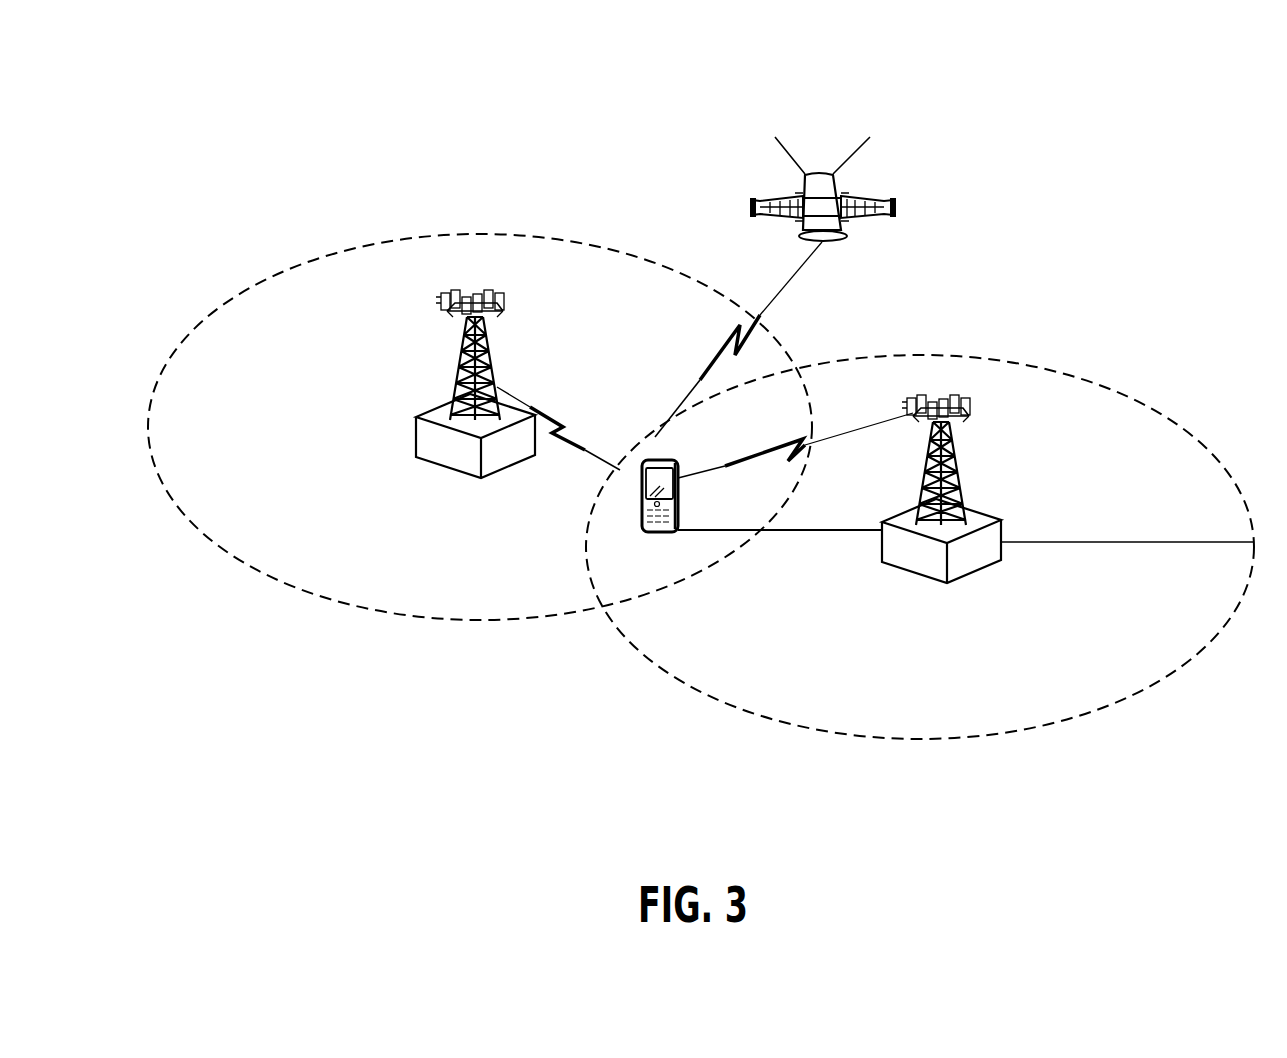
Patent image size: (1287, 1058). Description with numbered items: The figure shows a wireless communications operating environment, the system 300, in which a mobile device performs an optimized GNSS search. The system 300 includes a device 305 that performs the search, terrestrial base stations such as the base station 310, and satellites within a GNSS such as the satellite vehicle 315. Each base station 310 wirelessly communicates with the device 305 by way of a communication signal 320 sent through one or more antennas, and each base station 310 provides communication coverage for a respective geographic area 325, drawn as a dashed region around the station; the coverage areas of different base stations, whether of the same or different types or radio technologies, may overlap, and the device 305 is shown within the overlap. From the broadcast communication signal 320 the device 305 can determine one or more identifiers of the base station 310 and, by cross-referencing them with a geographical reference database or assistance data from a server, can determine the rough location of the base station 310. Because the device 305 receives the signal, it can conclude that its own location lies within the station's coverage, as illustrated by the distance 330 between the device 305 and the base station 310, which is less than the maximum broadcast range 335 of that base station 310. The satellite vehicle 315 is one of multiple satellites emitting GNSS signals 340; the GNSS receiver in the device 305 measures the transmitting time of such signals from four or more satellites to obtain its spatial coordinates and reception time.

The system 300 is at (995, 66).
The device 305 is at (730, 454).
The base station 310 is at (564, 498).
The satellite vehicle 315 is at (748, 162).
The communication signal 320 is at (595, 416).
The geographic area 325 is at (567, 219).
The distance 330 is at (790, 519).
The maximum broadcast range 335 is at (1152, 524).
The GNSS signals 340 is at (712, 347).